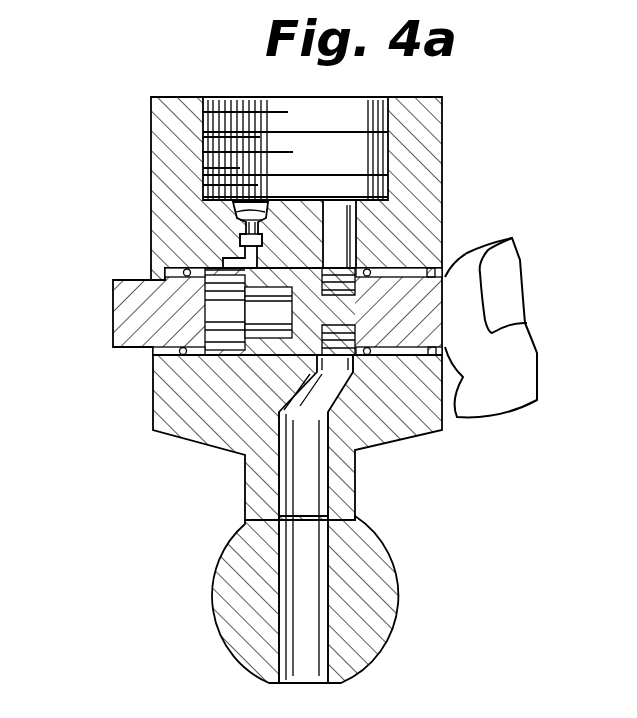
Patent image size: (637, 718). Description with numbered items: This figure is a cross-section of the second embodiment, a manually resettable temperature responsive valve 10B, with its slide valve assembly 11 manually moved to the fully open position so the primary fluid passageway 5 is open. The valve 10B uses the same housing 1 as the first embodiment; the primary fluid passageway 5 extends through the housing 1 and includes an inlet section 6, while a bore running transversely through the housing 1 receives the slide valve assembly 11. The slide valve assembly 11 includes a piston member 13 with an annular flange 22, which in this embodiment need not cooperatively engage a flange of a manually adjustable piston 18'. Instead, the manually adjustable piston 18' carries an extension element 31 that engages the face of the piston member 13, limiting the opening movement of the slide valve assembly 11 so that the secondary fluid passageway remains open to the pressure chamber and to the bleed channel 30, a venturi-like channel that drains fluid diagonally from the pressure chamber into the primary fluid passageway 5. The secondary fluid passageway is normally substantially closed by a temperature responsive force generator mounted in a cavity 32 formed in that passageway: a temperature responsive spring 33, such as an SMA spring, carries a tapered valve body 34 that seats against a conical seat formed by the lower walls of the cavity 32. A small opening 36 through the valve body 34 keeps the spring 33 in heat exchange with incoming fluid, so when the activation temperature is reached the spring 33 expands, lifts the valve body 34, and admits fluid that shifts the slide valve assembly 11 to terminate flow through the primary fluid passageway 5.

The housing 1 is at (287, 390).
The primary fluid passageway 5 is at (325, 488).
The inlet section 6 is at (341, 208).
The valve 10B is at (142, 405).
The slide valve assembly 11 is at (408, 270).
The piston member 13 is at (360, 366).
The manually adjustable piston 18' is at (240, 311).
The annular flange 22 is at (200, 350).
The bleed channel 30 is at (258, 368).
The extension element 31 is at (200, 310).
The cavity 32 is at (238, 214).
The temperature responsive spring 33 is at (245, 240).
The valve body 34 is at (240, 222).
The small opening 36 is at (255, 225).